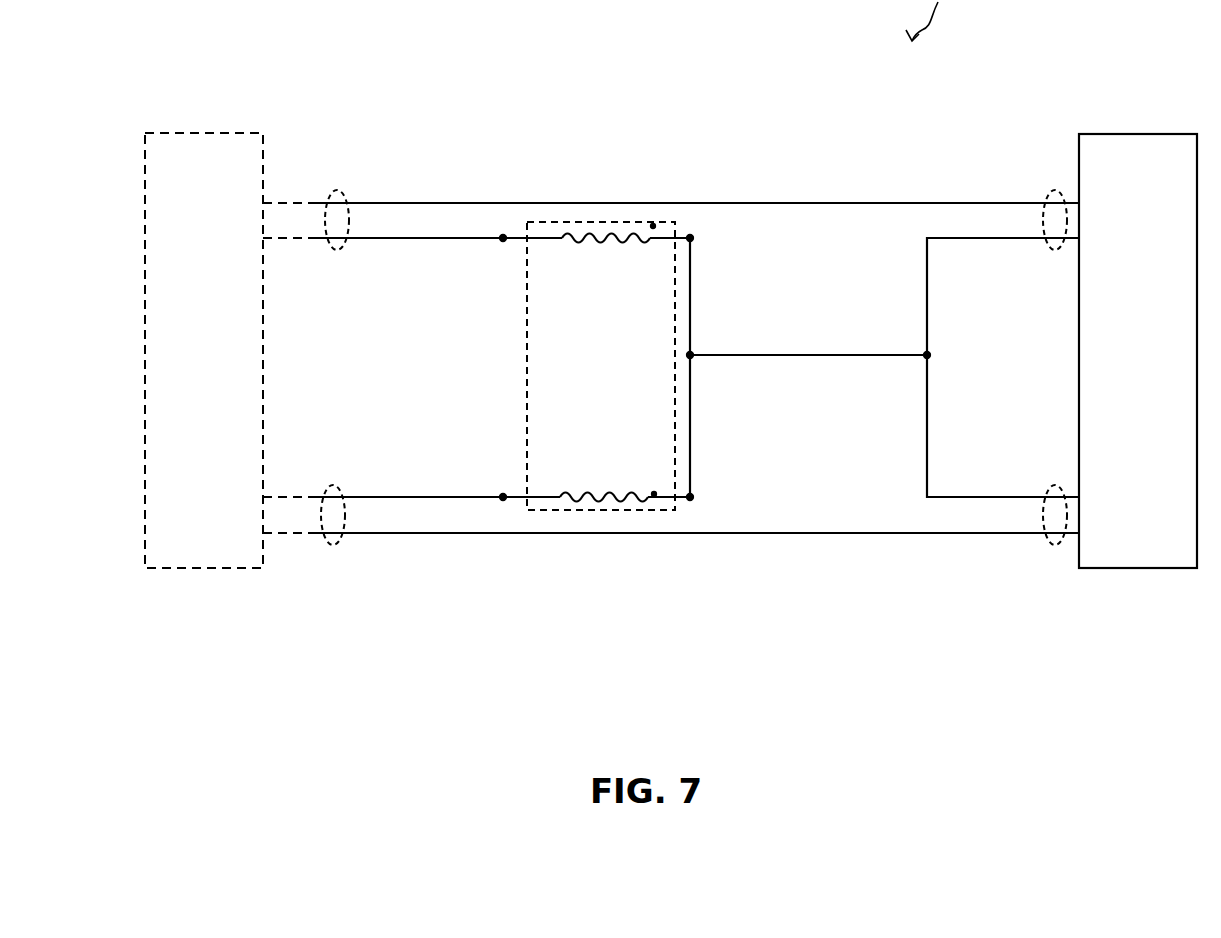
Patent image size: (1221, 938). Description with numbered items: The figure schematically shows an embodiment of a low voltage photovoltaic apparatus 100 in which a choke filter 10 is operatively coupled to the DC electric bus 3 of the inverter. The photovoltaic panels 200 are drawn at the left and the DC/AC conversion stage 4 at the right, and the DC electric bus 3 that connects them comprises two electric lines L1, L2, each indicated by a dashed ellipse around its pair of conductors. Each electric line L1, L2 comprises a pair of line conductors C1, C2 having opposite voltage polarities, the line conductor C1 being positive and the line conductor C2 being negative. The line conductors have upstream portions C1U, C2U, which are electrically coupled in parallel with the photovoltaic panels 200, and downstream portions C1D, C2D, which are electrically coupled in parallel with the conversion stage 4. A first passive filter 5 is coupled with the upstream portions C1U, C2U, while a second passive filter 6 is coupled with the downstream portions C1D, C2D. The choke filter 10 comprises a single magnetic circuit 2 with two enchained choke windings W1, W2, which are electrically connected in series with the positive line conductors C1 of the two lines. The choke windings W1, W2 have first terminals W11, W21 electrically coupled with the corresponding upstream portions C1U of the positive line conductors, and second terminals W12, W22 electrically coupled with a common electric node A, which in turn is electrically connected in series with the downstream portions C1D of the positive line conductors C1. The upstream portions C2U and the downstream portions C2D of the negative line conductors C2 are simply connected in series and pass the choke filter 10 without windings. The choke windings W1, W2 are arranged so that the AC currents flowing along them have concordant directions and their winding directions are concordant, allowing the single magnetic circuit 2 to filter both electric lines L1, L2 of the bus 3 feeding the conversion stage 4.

The photovoltaic panels 200 is at (213, 124).
The first passive filter 5 is at (671, 295).
The choke filter 10 is at (601, 308).
The DC electric bus 3 is at (725, 191).
The second passive filter 6 is at (827, 131).
The DC/AC conversion stage 4 is at (1117, 111).
The magnetic circuit 2 is at (617, 511).
The photovoltaic apparatus 100 is at (622, 612).
The first choke winding W1 is at (590, 240).
The second choke winding W2 is at (600, 482).
The first terminal of first choke winding W11 is at (504, 241).
The second terminal of first choke winding W12 is at (694, 239).
The first terminal of second choke winding W21 is at (503, 494).
The second terminal of second choke winding W22 is at (694, 497).
The common electric node A is at (692, 352).
The first electric line L1 is at (342, 191).
The second electric line L2 is at (338, 486).
The line conductor with positive voltage polarity C1 is at (380, 239).
The line conductor with negative voltage polarity C2 is at (380, 202).
The upstream portion of positive line conductor C1U is at (426, 239).
The upstream portion of negative line conductor C2U is at (426, 202).
The downstream portion of positive line conductor C1D is at (966, 239).
The downstream portion of negative line conductor C2D is at (966, 202).